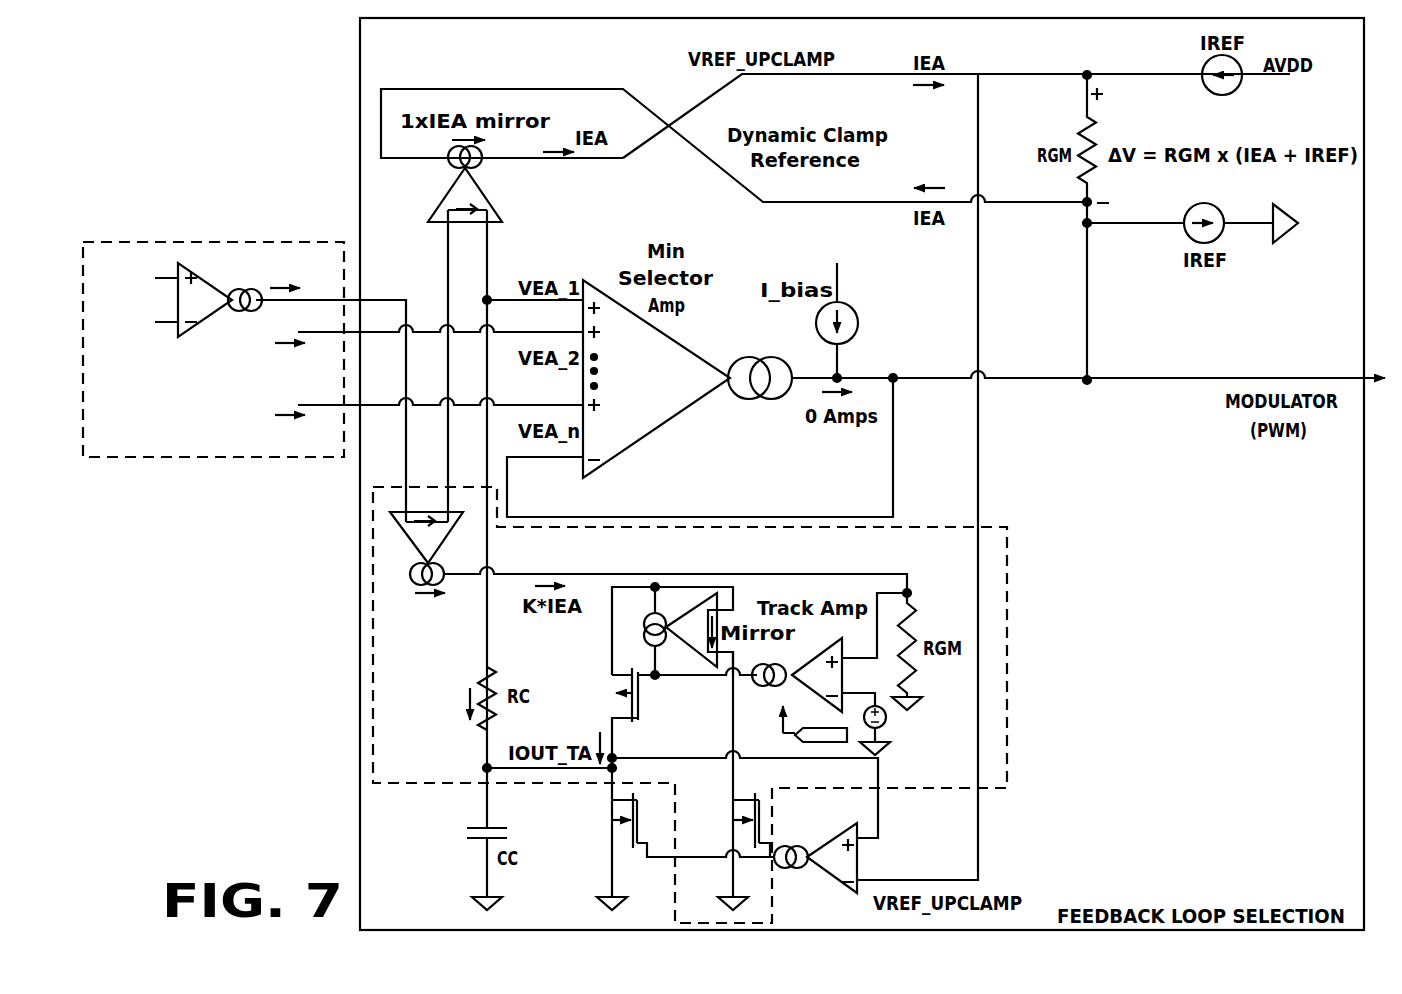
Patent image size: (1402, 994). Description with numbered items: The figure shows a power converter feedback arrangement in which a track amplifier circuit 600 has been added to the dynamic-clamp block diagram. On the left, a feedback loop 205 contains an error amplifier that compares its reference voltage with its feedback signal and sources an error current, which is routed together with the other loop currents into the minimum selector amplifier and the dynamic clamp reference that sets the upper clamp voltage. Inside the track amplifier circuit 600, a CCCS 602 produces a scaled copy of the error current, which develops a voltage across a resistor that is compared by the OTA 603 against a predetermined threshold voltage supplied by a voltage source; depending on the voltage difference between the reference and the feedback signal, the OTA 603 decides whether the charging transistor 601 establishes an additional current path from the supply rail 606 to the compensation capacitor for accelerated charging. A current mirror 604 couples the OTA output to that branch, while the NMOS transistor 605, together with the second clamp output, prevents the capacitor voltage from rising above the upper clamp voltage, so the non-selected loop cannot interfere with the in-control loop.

The feedback loop 205 is at (190, 241).
The track amplifier circuit 600 is at (1008, 592).
The charging transistor 601 is at (643, 696).
The CCCS 602 is at (420, 600).
The OTA 603 is at (845, 681).
The current mirror 604 is at (720, 596).
The NMOS transistor 605 is at (727, 861).
The supply rail 606 is at (627, 586).